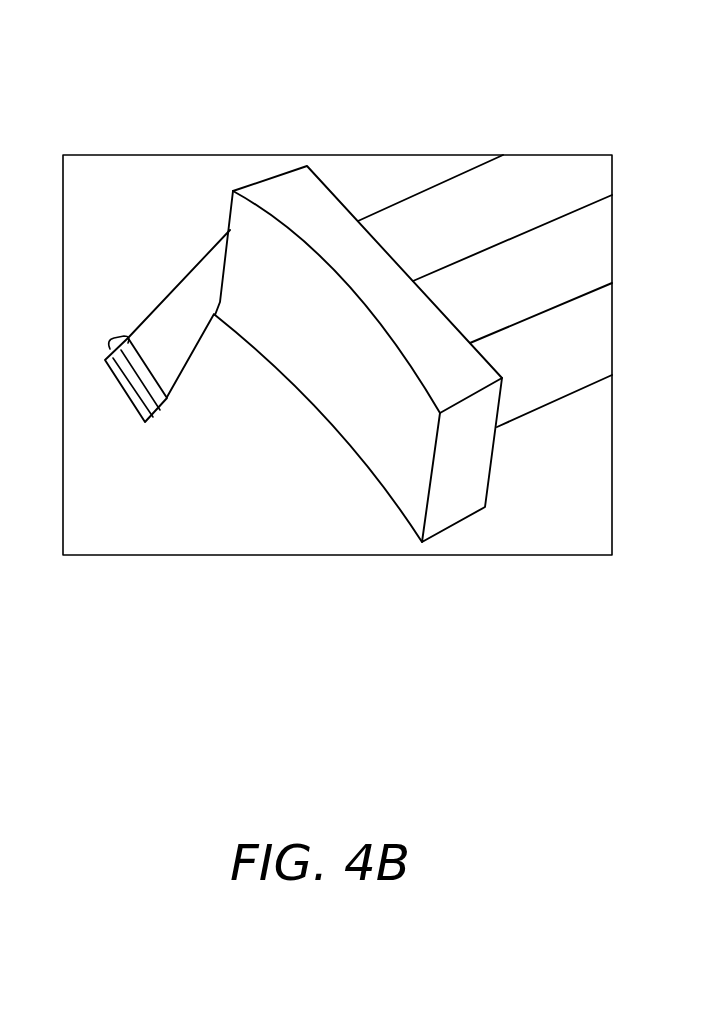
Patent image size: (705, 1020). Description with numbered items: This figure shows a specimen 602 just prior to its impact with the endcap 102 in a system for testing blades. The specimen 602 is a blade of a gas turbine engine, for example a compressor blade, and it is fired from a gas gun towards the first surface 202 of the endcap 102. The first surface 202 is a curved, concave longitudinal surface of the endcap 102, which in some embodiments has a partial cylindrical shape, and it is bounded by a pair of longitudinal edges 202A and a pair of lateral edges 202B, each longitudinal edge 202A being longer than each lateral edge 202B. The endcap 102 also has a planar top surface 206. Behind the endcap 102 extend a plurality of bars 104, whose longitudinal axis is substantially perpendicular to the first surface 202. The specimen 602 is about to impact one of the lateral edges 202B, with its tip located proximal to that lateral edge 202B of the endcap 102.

The endcap 102 is at (265, 159).
The bars 104 is at (538, 183).
The first surface 202 is at (343, 383).
The longitudinal edges 202A is at (328, 262).
The lateral edges 202B is at (230, 206).
The top surface 206 is at (387, 282).
The specimen 602 is at (190, 290).